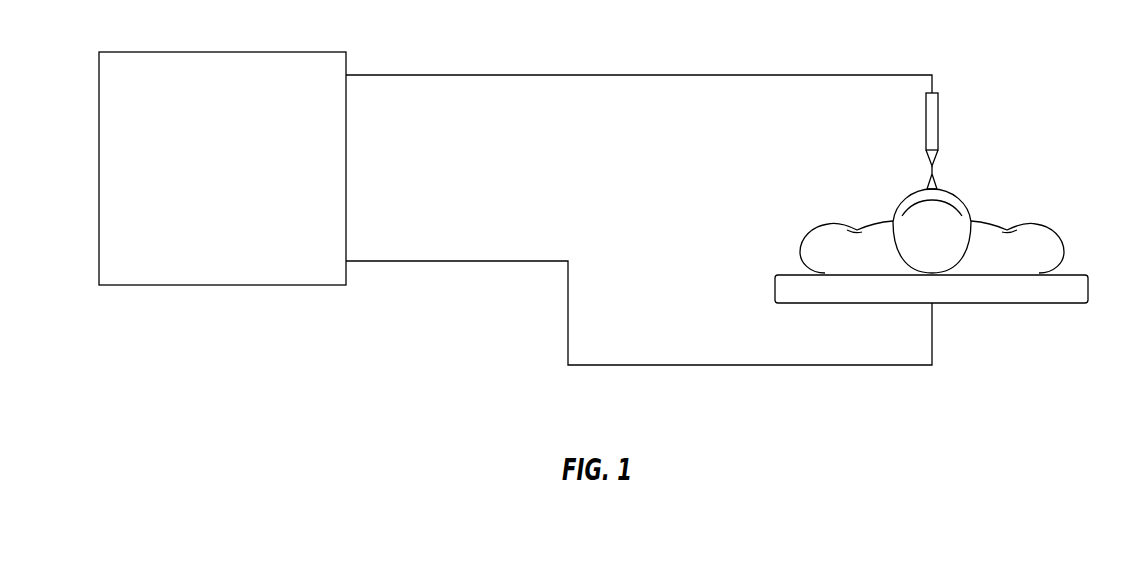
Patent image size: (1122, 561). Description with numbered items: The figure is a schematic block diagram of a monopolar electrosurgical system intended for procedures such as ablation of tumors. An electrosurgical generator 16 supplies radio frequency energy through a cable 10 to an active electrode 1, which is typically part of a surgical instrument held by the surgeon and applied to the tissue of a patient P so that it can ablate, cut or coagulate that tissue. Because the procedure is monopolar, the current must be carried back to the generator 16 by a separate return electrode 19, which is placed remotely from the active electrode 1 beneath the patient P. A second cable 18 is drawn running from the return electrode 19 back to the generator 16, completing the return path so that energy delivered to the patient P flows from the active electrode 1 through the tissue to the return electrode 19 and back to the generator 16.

The electrosurgical generator 16 is at (162, 52).
The cable 10 is at (653, 75).
The return cable 18 is at (663, 365).
The active electrode 1 is at (938, 124).
The patient P is at (1030, 213).
The return electrode 19 is at (1027, 304).